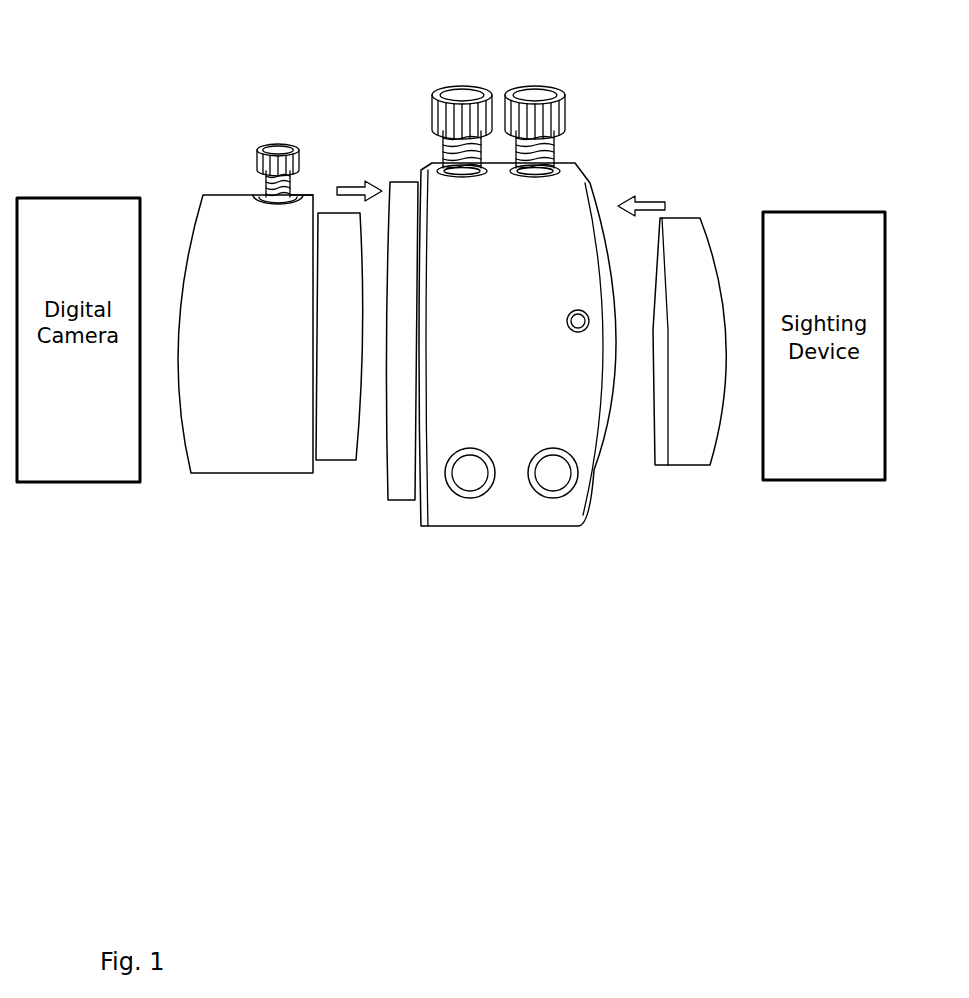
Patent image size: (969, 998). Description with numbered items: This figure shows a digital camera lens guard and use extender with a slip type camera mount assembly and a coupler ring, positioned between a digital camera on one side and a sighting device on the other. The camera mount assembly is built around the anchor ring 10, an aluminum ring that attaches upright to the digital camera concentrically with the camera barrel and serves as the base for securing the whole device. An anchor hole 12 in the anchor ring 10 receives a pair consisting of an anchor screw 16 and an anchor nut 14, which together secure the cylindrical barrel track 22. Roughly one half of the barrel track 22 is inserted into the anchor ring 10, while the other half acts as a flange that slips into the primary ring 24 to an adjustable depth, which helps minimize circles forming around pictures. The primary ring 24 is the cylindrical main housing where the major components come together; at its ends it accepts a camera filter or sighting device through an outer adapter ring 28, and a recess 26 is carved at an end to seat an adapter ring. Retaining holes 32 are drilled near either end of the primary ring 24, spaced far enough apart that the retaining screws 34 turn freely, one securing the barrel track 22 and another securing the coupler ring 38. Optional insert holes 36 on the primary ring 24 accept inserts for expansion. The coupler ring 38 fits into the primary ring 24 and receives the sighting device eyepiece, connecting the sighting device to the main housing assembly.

The anchor ring 10 is at (244, 455).
The anchor hole 12 is at (255, 200).
The anchor nut 14 is at (298, 198).
The anchor screw 16 is at (278, 147).
The barrel track 22 is at (326, 462).
The primary ring 24 is at (582, 456).
The recess 26 is at (411, 490).
The outer adapter ring 28 is at (398, 463).
The retaining holes 32 is at (493, 319).
The retaining screw 34 is at (535, 95).
The insert holes 36 is at (582, 311).
The coupler ring 38 is at (698, 248).